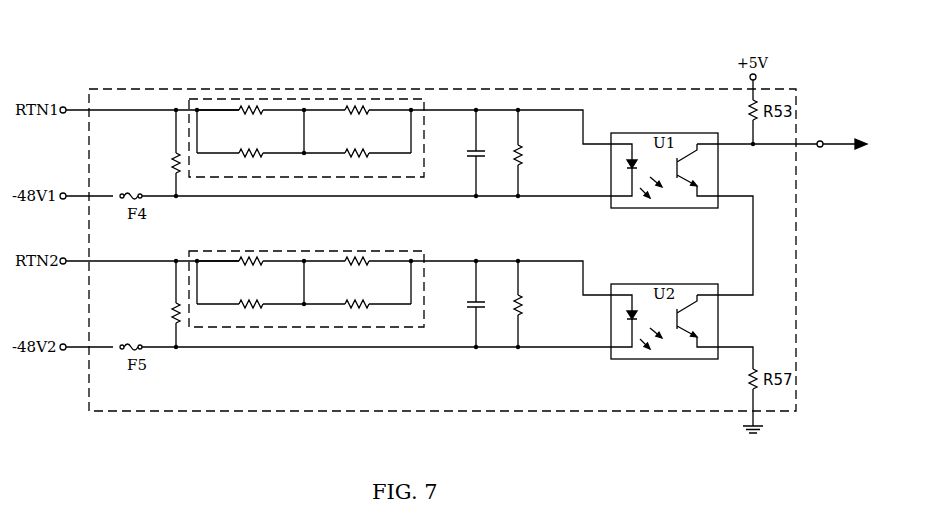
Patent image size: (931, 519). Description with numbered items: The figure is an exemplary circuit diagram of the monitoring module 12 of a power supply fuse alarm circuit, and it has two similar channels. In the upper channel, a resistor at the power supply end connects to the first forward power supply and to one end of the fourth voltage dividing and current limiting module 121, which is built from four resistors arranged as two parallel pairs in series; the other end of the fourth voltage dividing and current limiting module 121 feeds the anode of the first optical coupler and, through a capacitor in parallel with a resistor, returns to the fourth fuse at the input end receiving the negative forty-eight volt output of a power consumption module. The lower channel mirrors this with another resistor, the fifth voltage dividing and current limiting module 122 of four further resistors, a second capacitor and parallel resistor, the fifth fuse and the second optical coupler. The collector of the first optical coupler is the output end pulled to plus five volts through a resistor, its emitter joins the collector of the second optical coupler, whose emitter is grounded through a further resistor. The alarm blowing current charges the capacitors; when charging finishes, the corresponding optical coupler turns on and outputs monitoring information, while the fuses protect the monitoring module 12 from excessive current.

The monitoring module 12 is at (468, 89).
The fourth voltage dividing and current limiting module 121 is at (313, 99).
The fifth voltage dividing and current limiting module 122 is at (307, 251).